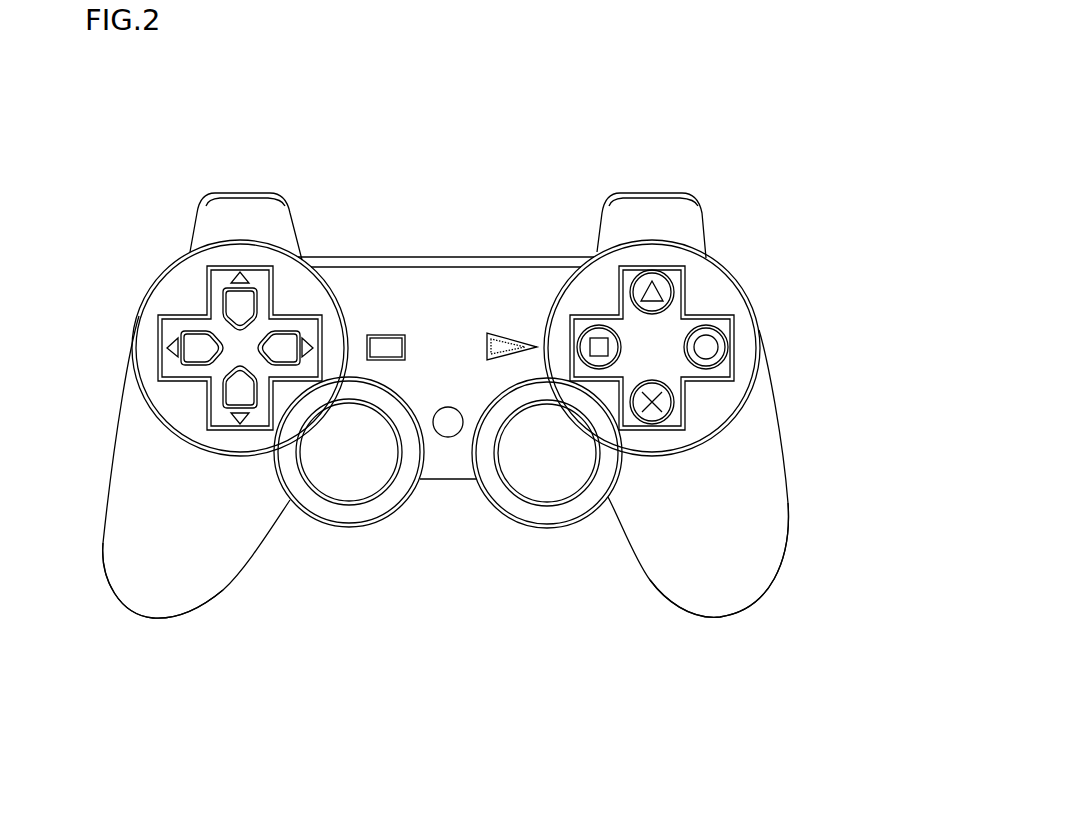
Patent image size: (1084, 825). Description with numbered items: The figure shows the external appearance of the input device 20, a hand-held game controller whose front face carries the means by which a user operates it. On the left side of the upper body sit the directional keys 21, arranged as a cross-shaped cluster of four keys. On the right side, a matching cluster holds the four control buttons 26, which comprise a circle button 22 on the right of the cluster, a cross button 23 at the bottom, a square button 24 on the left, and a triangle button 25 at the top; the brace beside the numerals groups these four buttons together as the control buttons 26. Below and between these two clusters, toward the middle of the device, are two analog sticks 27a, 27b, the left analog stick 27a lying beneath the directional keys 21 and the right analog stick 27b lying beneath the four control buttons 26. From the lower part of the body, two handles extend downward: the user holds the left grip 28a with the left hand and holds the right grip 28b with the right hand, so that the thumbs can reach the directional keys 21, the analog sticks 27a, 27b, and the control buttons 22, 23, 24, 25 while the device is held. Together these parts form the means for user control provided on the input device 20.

The input device 20 is at (832, 100).
The directional keys 21 is at (178, 327).
The circle button 22 is at (715, 335).
The cross button 23 is at (665, 400).
The square button 24 is at (613, 349).
The triangle button 25 is at (663, 290).
The control buttons 26 is at (863, 235).
The analog stick 27a is at (360, 477).
The analog stick 27b is at (558, 477).
The left grip 28a is at (172, 587).
The right grip 28b is at (733, 578).